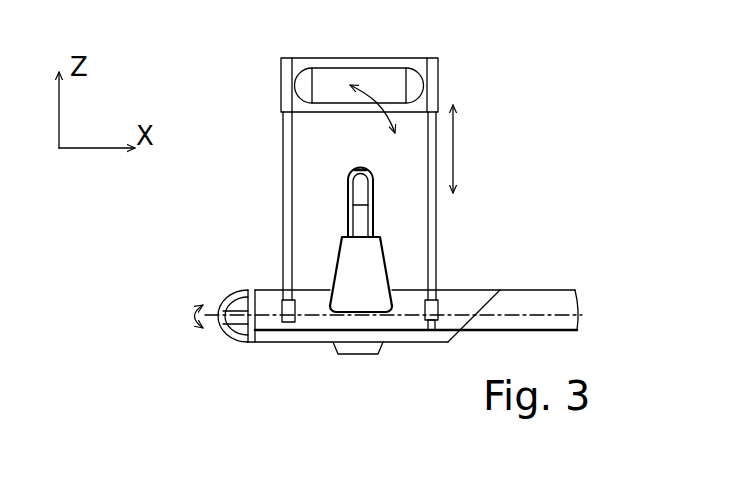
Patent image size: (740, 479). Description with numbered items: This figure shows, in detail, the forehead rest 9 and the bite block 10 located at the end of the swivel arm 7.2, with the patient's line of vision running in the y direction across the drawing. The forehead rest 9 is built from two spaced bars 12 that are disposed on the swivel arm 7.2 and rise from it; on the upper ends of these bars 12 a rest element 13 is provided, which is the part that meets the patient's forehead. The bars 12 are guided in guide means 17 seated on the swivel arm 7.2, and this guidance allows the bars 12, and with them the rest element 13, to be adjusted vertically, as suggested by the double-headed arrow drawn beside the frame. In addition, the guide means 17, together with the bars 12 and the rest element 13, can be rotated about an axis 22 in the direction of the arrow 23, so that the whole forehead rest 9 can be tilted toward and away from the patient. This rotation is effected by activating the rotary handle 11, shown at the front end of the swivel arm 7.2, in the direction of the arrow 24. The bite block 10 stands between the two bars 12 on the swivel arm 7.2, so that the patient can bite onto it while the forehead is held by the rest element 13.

The forehead rest 9 is at (268, 72).
The rest element 13 is at (420, 120).
The arrow 23 is at (387, 80).
The bite block 10 is at (362, 188).
The bars 12 is at (433, 250).
The axis 22 is at (553, 312).
The guide means 17 is at (282, 310).
The arrow 24 is at (203, 305).
The rotary handle 11 is at (222, 333).
The swivel arm 7.2 is at (328, 327).